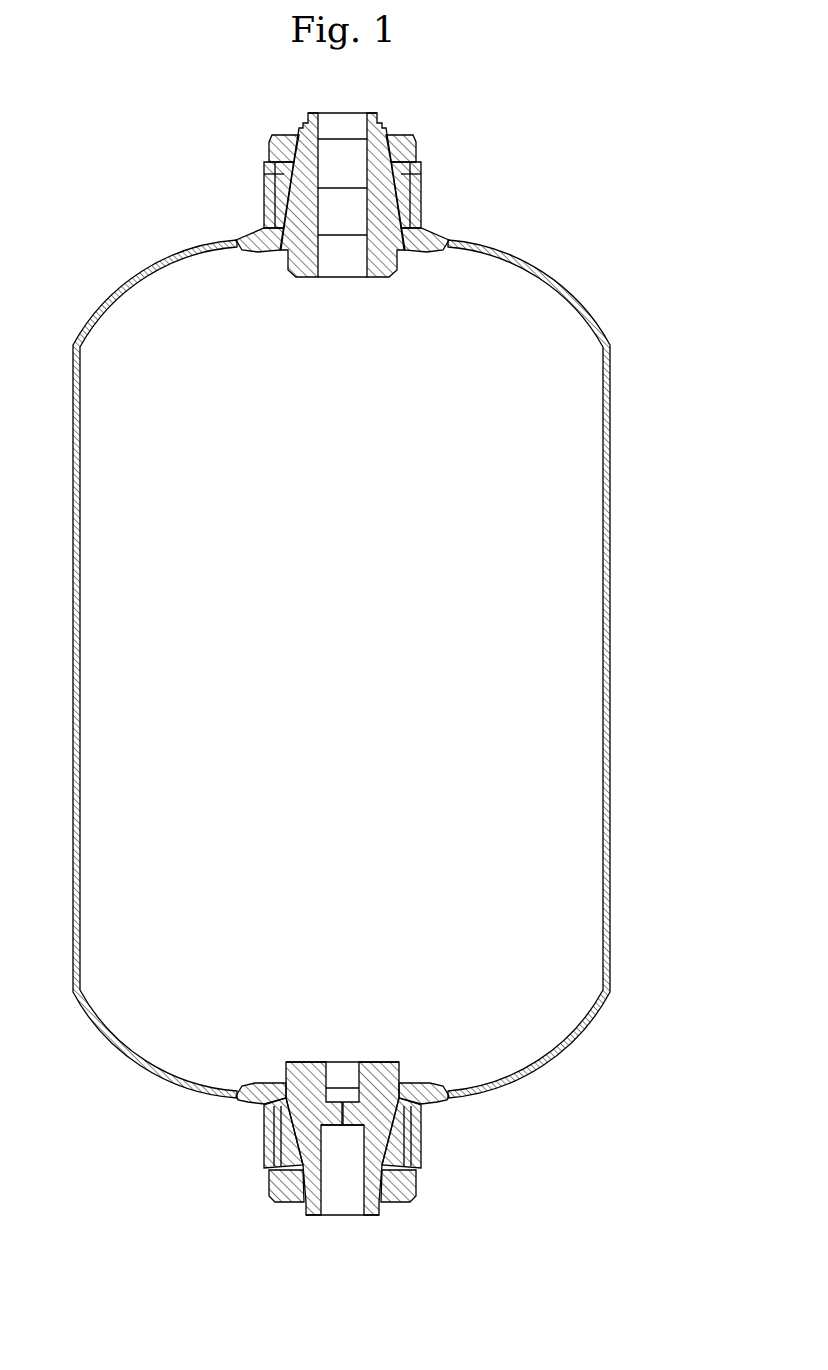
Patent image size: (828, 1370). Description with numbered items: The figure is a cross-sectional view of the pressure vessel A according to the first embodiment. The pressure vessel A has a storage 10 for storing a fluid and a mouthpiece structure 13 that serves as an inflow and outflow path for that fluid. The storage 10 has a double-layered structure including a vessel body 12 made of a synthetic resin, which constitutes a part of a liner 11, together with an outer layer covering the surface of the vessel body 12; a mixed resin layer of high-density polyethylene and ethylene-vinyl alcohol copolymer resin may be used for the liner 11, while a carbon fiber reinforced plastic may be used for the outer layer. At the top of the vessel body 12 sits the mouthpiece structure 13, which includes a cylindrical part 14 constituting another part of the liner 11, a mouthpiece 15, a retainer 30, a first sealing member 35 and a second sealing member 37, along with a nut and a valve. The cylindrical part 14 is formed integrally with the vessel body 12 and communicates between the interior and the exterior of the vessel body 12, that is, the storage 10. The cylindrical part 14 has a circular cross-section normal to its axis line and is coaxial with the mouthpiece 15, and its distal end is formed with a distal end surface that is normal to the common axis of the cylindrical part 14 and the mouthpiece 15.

The storage 10 is at (609, 294).
The liner 11 is at (415, 221).
The vessel body 12 is at (612, 365).
The mouthpiece structure 13 is at (447, 160).
The cylindrical part 14 is at (415, 196).
The mouthpiece 15 is at (283, 208).
The retainer 30 is at (266, 177).
The first sealing member 35 is at (395, 160).
The second sealing member 37 is at (413, 174).
The pressure vessel A is at (598, 195).